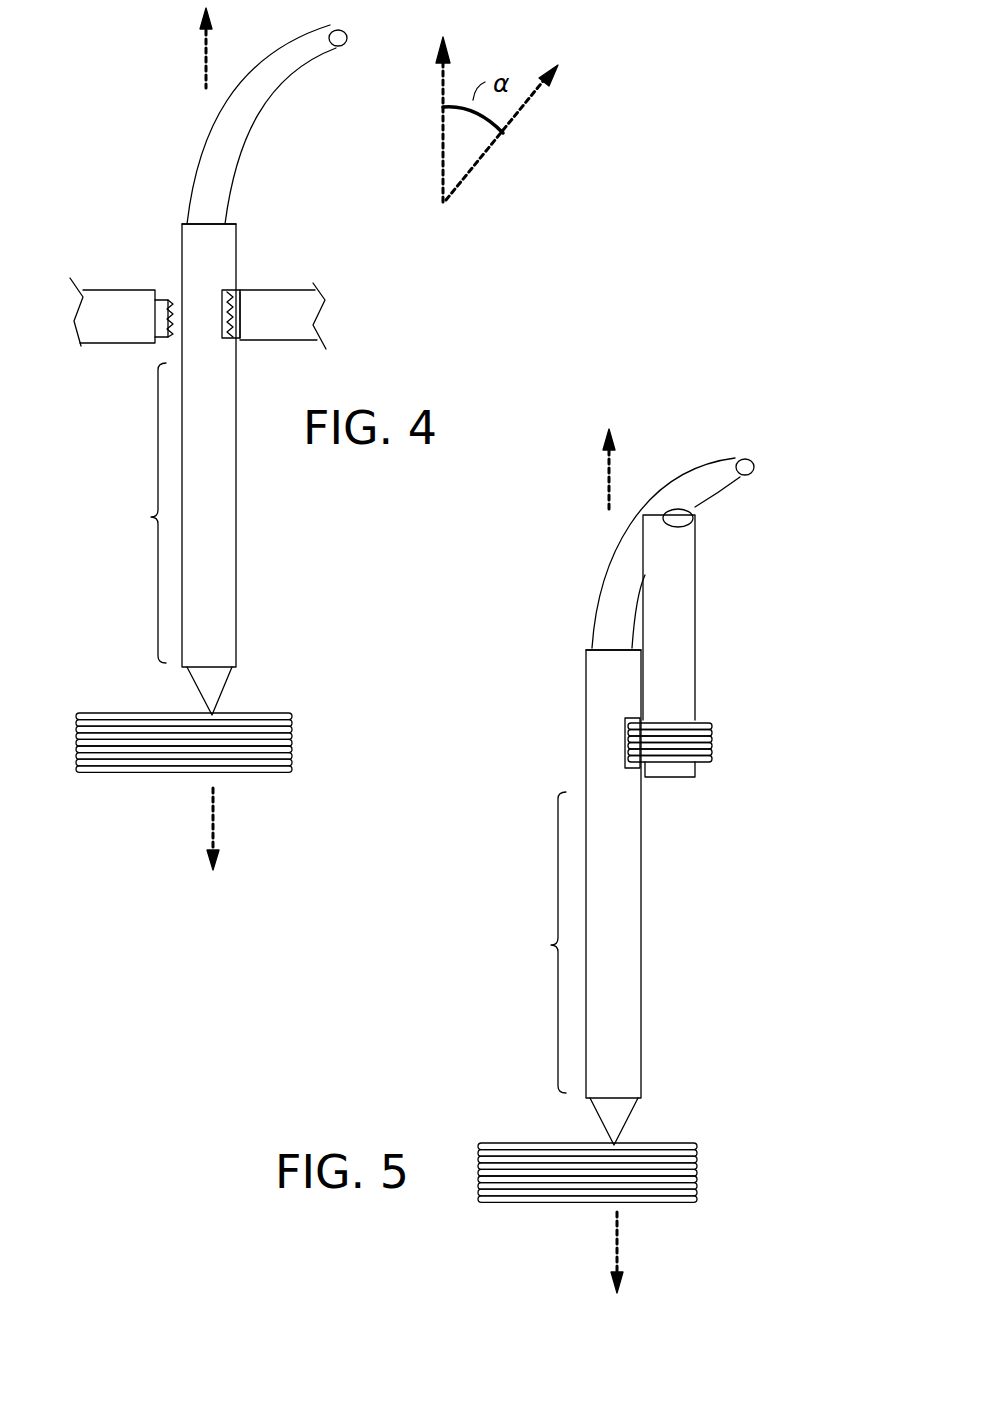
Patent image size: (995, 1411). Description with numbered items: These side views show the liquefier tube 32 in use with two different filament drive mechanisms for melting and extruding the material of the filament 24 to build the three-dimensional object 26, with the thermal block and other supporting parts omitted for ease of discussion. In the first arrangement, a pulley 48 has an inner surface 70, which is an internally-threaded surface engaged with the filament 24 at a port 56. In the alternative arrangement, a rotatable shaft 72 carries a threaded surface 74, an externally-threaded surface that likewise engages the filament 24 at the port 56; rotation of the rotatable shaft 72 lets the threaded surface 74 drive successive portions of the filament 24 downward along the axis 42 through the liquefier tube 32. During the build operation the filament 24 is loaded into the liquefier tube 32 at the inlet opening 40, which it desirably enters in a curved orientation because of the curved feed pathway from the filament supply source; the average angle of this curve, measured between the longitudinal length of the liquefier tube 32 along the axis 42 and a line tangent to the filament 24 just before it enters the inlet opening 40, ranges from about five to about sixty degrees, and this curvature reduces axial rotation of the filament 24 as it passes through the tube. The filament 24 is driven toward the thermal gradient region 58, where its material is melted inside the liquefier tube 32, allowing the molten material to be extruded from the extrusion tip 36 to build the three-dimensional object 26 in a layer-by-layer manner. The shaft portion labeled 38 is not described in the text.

In FIG. 4, the filament 24 is at (271, 86).
In FIG. 5, the filament 24 is at (704, 468).
In FIG. 4, the 3D object 26 is at (106, 712).
In FIG. 5, the 3D object 26 is at (510, 1143).
In FIG. 4, the liquefier tube 32 is at (110, 461).
In FIG. 5, the liquefier tube 32 is at (508, 889).
In FIG. 4, the extrusion tip 36 is at (222, 688).
In FIG. 5, the extrusion tip 36 is at (625, 1114).
In FIG. 4, the needle shaft 38 is at (226, 470).
In FIG. 5, the needle shaft 38 is at (635, 900).
In FIG. 4, the inlet opening 40 is at (189, 216).
In FIG. 5, the inlet opening 40 is at (595, 644).
In FIG. 4, the axis 42 is at (204, 60).
In FIG. 5, the axis 42 is at (607, 481).
In FIG. 4, the pulley 48 is at (96, 296).
In FIG. 4, the port 56 is at (247, 280).
In FIG. 5, the port 56 is at (663, 711).
In FIG. 4, the thermal gradient region 58 is at (140, 513).
In FIG. 5, the thermal gradient region 58 is at (541, 942).
In FIG. 4, the inner surface 70 is at (166, 298).
In FIG. 5, the rotatable shaft 72 is at (708, 592).
In FIG. 5, the threaded surface 74 is at (712, 738).